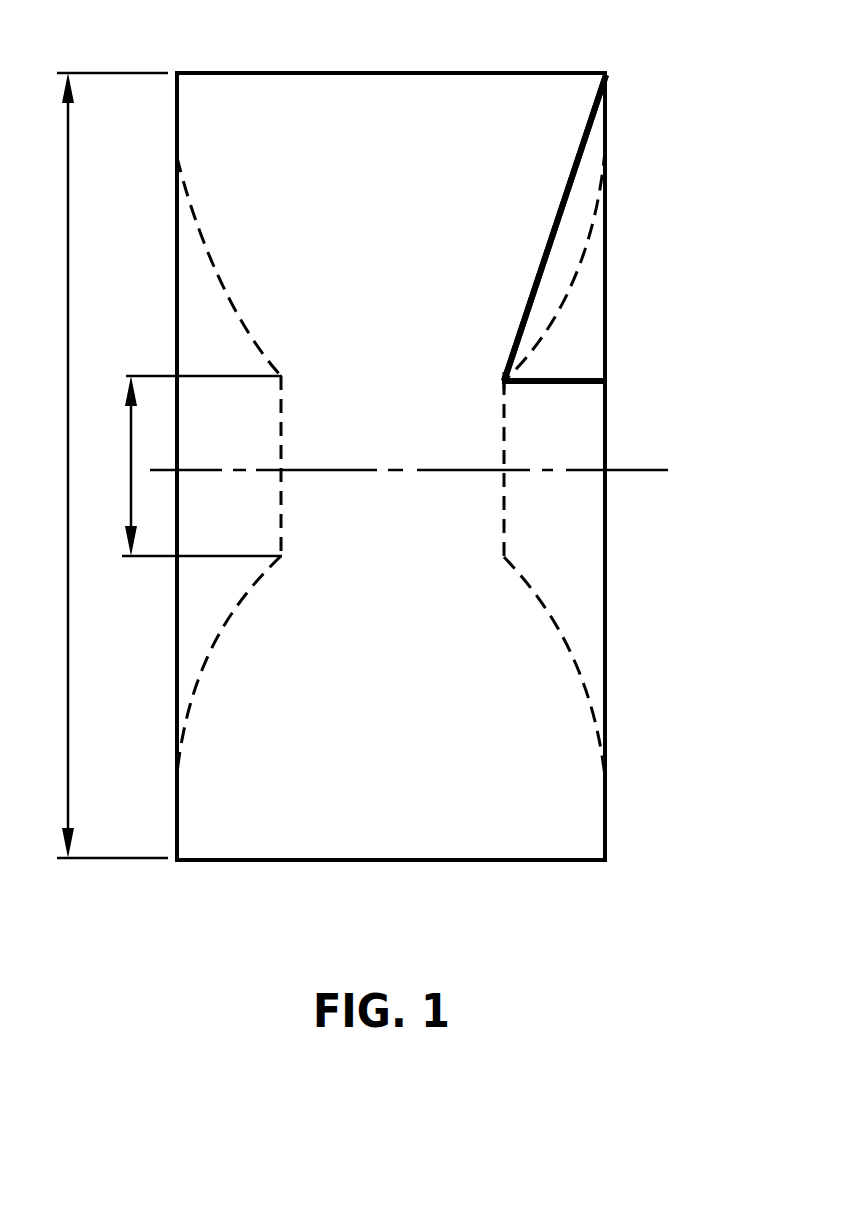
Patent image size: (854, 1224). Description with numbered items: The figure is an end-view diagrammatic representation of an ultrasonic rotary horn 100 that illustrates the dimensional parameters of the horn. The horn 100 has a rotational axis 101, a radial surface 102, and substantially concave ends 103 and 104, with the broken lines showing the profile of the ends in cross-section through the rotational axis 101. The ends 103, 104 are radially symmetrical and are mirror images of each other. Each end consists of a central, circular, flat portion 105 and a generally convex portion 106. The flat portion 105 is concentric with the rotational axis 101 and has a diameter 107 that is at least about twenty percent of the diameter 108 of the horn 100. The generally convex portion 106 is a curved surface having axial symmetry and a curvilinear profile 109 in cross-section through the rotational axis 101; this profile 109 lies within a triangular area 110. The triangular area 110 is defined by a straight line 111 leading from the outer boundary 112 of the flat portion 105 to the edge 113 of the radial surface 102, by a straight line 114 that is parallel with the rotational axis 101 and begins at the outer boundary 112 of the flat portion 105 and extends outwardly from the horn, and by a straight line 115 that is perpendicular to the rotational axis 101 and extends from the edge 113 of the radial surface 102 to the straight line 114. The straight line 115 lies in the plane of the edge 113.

The horn 100 is at (625, 818).
The rotational axis 101 is at (647, 474).
The radial surface 102 is at (377, 73).
The substantially concave end 103 is at (577, 558).
The substantially concave end 104 is at (203, 603).
The central, circular, flat portion 105 is at (503, 430).
The generally convex portion 106 is at (557, 636).
The diameter of flat portion 107 is at (129, 500).
The diameter of horn 108 is at (71, 316).
The curvilinear profile 109 is at (572, 289).
The triangular area 110 is at (572, 318).
The straight line 111 is at (590, 117).
The outer boundary of flat portion 112 is at (503, 383).
The edge of radial surface 113 is at (607, 73).
The straight line 114 is at (567, 380).
The straight line 115 is at (606, 228).